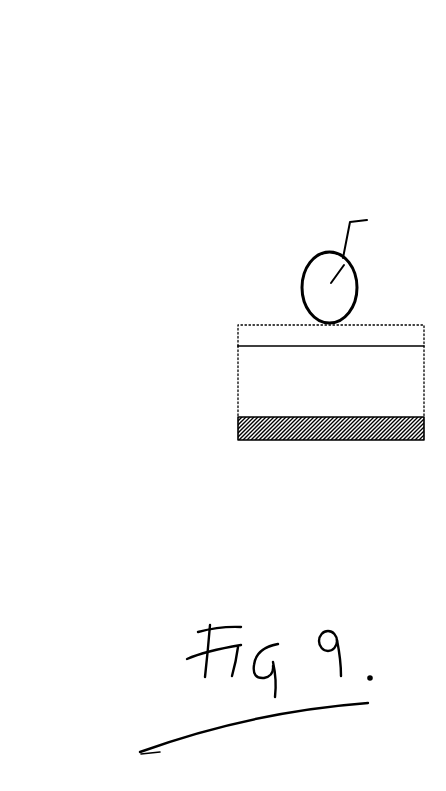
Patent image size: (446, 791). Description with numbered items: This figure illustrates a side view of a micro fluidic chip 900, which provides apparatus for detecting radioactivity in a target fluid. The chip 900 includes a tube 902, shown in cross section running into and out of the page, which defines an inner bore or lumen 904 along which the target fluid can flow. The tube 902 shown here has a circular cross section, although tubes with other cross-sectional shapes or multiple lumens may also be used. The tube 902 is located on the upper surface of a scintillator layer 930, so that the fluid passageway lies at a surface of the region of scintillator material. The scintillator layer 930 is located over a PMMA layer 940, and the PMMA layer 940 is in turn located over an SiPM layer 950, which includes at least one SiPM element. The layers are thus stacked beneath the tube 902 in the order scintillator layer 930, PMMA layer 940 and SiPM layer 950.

The micro fluidic chip 900 is at (332, 135).
The tube 902 is at (292, 291).
The inner bore or lumen 904 is at (389, 222).
The scintillator layer 930 is at (238, 343).
The PMMA layer 940 is at (250, 387).
The SiPM layer 950 is at (246, 430).